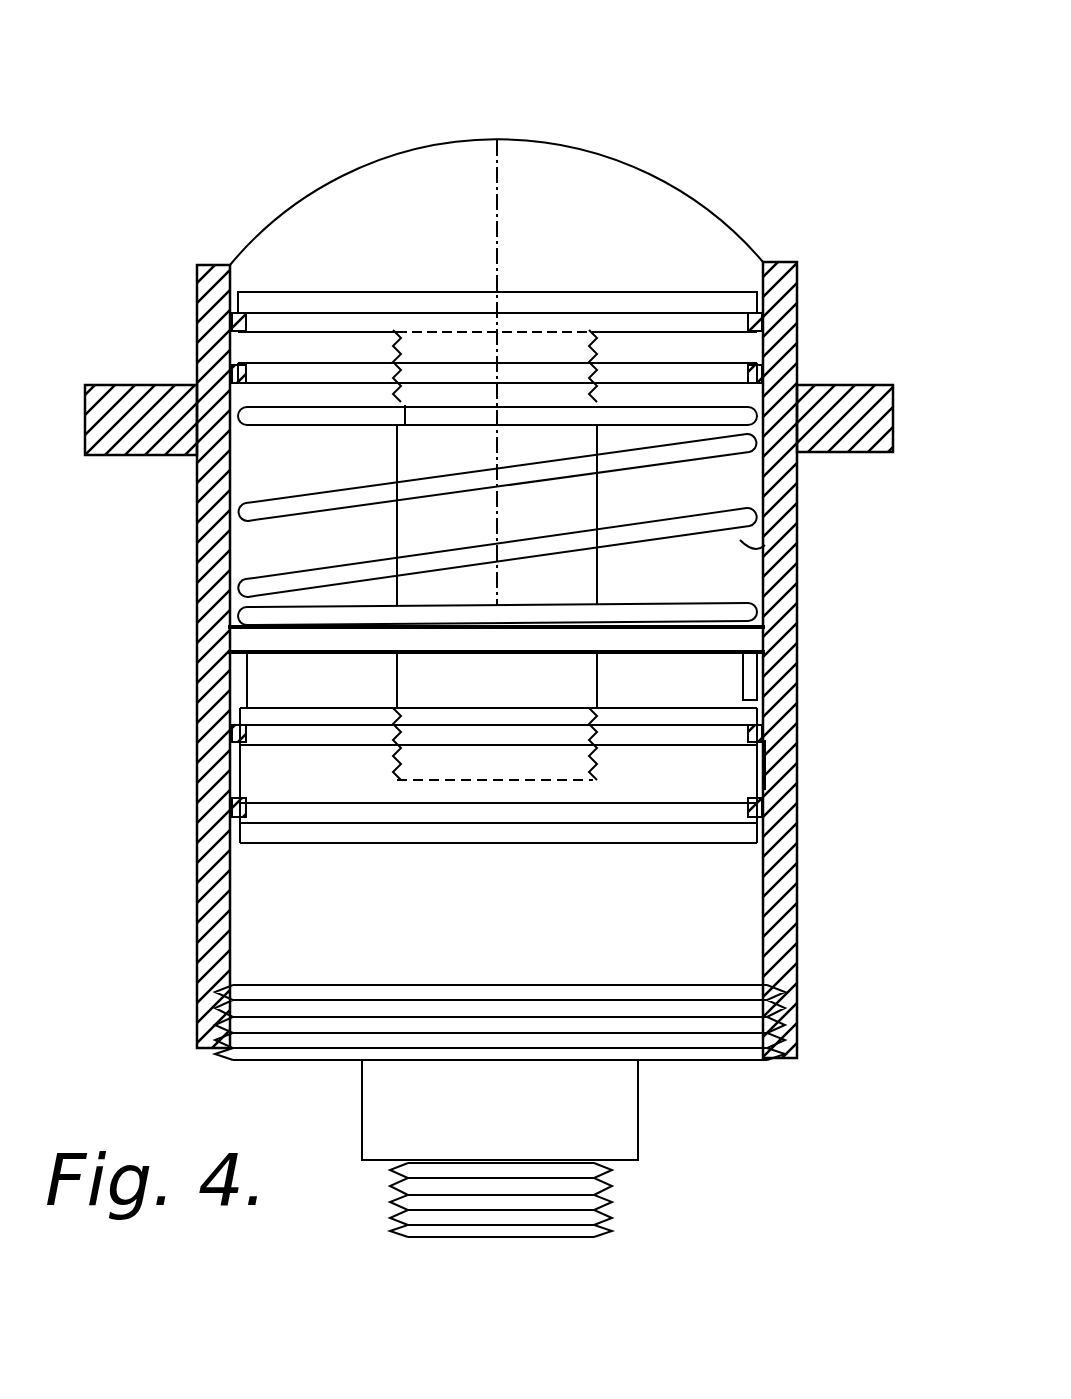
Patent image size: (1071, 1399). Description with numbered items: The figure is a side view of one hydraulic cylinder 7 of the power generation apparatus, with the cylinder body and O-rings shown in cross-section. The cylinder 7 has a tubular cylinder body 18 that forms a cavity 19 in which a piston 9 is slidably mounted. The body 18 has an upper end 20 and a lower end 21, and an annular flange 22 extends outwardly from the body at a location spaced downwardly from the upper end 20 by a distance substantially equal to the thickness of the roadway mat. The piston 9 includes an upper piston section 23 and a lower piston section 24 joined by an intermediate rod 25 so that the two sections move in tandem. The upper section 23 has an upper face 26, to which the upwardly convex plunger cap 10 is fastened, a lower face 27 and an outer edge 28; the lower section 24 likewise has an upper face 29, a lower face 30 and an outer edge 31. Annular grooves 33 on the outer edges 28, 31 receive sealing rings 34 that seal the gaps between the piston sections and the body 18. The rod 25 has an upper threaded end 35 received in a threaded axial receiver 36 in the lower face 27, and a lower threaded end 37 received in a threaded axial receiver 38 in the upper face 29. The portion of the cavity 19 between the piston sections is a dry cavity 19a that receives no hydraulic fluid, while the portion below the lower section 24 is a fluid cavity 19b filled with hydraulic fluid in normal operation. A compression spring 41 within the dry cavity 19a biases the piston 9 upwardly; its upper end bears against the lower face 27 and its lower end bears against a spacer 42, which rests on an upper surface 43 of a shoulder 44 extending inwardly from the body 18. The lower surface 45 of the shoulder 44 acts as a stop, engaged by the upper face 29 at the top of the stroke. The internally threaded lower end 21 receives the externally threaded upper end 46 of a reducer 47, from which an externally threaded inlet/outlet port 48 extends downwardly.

The hydraulic cylinder 7 is at (804, 80).
The piston 9 is at (320, 180).
The plunger cap 10 is at (535, 138).
The cylinder body 18 is at (197, 606).
The cavity 19 is at (760, 940).
The dry cavity 19a is at (745, 498).
The fluid cavity 19b is at (675, 932).
The upper end 20 is at (782, 252).
The lower end 21 is at (790, 1060).
The annular flange 22 is at (855, 378).
The upper piston section 23 is at (568, 290).
The lower piston section 24 is at (650, 704).
The intermediate rod 25 is at (603, 500).
The upper face 26 is at (375, 292).
The lower face 27 is at (300, 405).
The outer edge 28 is at (790, 350).
The upper face 29 is at (292, 708).
The lower face 30 is at (308, 843).
The outer edge 31 is at (773, 768).
The annular grooves 33 is at (318, 385).
The sealing rings 34 is at (250, 322).
The upper threaded end 35 is at (520, 330).
The threaded axial receiver 36 is at (415, 385).
The lower threaded end 37 is at (518, 780).
The threaded axial receiver 38 is at (420, 724).
The compression spring 41 is at (768, 546).
The spacer 42 is at (640, 620).
The upper surface 43 is at (240, 652).
The shoulder 44 is at (256, 680).
The lower surface 45 is at (755, 722).
The upper end 46 is at (338, 1005).
The reducer 47 is at (638, 1106).
The inlet/outlet port 48 is at (612, 1215).